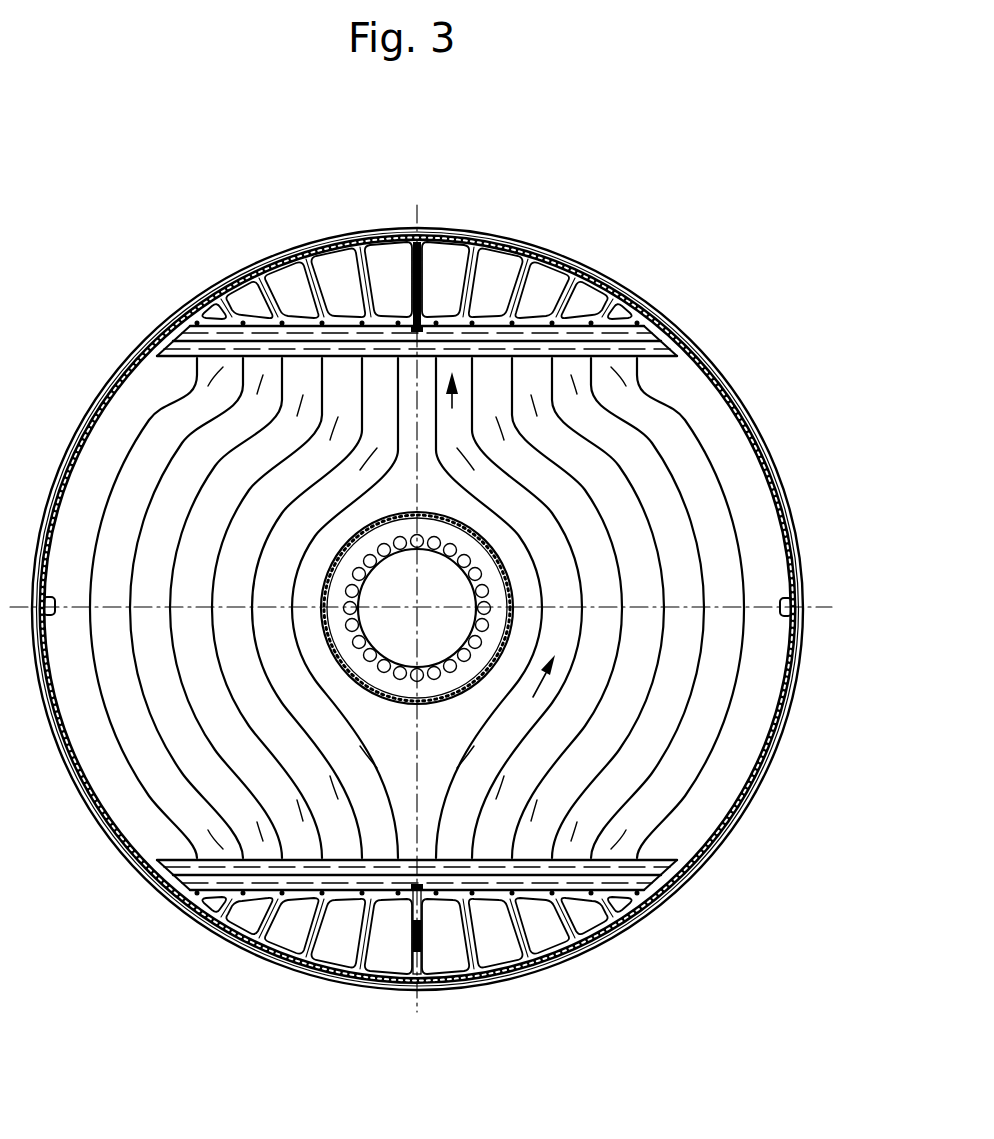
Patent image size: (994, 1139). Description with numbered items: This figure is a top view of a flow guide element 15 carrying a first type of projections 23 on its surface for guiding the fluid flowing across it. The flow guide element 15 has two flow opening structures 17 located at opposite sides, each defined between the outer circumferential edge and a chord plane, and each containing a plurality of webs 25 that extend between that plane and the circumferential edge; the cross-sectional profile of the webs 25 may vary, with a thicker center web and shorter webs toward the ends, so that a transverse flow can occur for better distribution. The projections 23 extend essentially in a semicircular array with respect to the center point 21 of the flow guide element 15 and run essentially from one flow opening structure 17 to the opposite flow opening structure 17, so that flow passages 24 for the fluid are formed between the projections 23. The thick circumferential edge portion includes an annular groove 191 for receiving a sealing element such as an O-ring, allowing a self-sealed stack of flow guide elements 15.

The flow guide element 15 is at (128, 415).
The annular groove 191 is at (793, 550).
The flow opening structure 17 is at (441, 262).
The webs 25 is at (162, 345).
The projections 23 is at (520, 535).
The flow passages 24 is at (455, 406).
The center point 21 is at (412, 609).